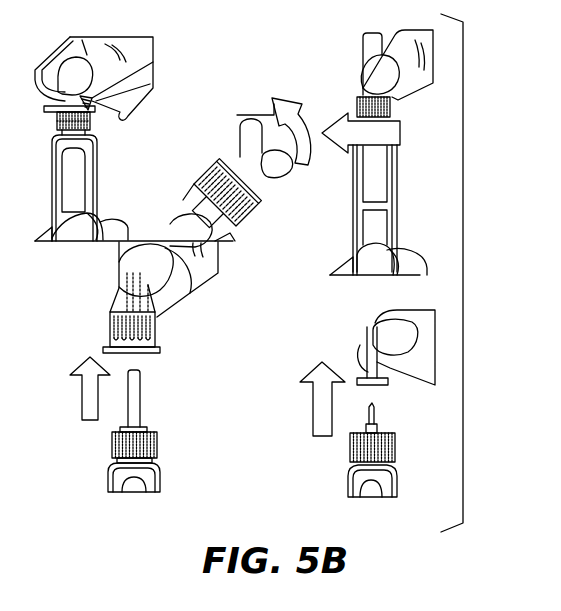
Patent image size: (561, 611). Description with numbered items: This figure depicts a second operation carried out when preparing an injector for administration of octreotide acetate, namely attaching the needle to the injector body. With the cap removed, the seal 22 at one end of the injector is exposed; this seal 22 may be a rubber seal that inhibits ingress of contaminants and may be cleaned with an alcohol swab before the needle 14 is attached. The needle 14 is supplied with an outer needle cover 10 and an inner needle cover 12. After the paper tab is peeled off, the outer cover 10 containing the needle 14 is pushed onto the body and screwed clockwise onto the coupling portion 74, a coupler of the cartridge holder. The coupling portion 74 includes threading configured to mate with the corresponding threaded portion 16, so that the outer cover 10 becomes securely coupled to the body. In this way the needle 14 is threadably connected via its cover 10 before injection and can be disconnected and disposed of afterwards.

The outer needle cover 10 is at (245, 218).
The inner needle cover 12 is at (360, 332).
The needle 14 is at (378, 405).
The threaded portion 16 is at (347, 454).
The seal 22 is at (92, 74).
The coupling portion 74 is at (53, 120).